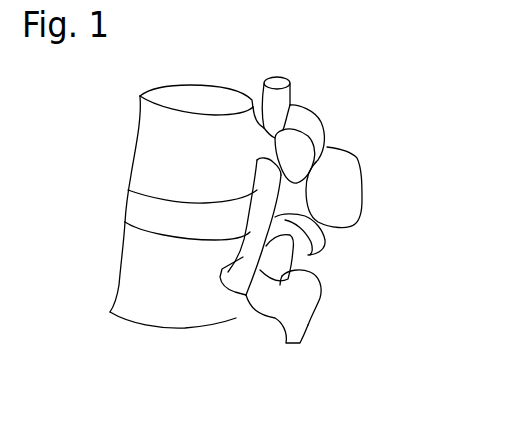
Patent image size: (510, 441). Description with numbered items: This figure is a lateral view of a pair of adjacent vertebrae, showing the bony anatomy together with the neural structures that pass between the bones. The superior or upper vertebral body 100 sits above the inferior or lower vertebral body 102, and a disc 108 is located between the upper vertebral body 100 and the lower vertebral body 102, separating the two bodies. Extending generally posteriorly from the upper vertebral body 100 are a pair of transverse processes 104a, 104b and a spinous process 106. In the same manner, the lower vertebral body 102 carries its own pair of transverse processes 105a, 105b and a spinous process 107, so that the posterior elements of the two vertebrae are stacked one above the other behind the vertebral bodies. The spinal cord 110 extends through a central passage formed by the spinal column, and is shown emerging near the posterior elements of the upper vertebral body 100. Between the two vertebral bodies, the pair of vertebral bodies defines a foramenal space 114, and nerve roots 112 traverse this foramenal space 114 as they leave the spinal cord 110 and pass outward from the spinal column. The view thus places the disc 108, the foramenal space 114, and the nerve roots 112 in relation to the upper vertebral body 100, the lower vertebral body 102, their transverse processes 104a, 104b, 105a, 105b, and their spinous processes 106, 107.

The upper vertebral body 100 is at (193, 93).
The lower vertebral body 102 is at (146, 273).
The disc 108 is at (150, 213).
The spinal cord 110 is at (293, 102).
The transverse process 104b is at (320, 113).
The transverse process 104a is at (282, 151).
The spinous process 106 is at (345, 186).
The transverse process 105b is at (325, 243).
The foramenal space 114 is at (316, 257).
The transverse process 105a is at (293, 280).
The spinous process 107 is at (320, 308).
The nerve roots 112 is at (240, 297).